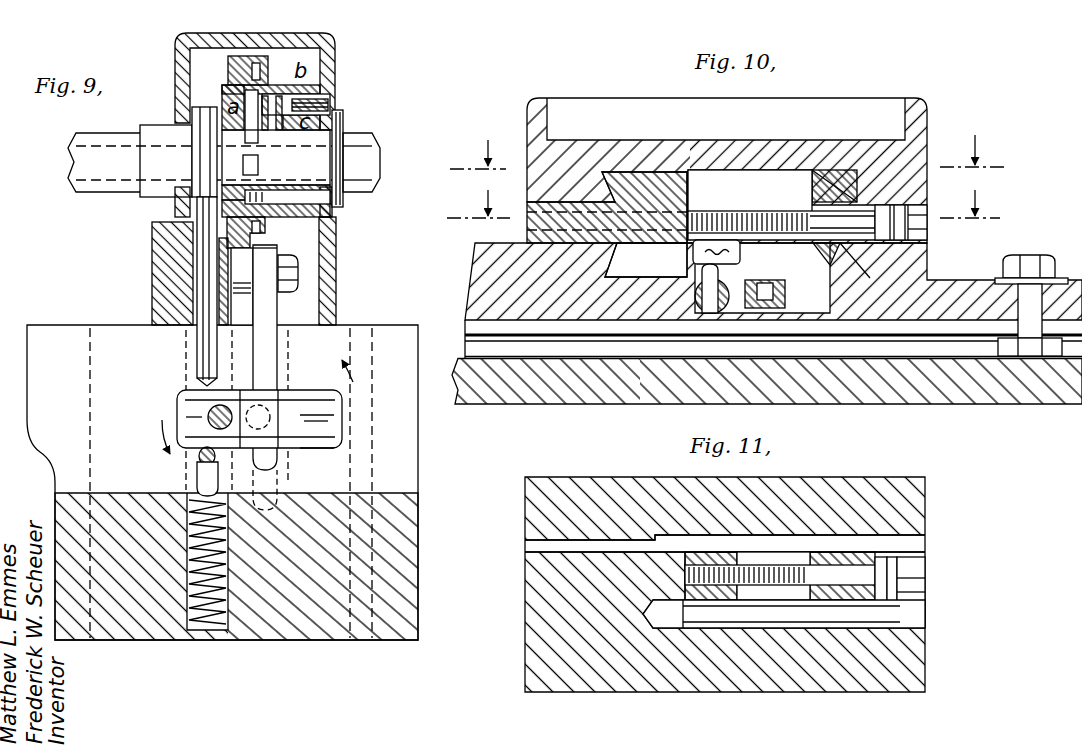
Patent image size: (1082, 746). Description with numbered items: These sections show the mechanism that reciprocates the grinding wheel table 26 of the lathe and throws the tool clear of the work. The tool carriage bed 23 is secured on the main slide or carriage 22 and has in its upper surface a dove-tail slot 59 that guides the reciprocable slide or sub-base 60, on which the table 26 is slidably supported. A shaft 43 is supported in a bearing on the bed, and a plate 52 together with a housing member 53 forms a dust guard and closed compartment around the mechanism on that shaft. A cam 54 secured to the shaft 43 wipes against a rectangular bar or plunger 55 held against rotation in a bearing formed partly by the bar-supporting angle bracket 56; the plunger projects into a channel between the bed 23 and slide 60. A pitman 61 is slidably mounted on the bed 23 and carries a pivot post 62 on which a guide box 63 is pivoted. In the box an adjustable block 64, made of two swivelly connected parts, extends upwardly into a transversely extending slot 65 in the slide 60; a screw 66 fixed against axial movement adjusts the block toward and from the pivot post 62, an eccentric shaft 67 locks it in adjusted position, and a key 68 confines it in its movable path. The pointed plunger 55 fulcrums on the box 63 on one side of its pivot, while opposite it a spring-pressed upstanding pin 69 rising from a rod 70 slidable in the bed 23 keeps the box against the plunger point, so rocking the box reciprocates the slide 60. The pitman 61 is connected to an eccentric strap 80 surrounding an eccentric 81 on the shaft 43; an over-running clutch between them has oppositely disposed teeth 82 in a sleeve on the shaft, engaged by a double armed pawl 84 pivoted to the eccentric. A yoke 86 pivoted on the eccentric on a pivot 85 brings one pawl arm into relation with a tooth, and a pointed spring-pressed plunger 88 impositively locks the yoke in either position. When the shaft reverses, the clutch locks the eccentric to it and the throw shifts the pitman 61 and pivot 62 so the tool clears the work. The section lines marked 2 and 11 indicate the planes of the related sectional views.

In FIG. 10, the section line 2- 2 is at (727, 151).
In FIG. 10, the section line 11- 11 is at (732, 200).
In FIG. 10, the main slide or carriage 22 is at (997, 370).
In FIG. 9, the tool carriage bed 23 is at (419, 466).
In FIG. 10, the tool carriage bed 23 is at (472, 272).
In FIG. 10, the table 26 is at (929, 136).
In FIG. 9, the shaft 43 is at (96, 183).
In FIG. 9, the plate 52 is at (176, 63).
In FIG. 9, the housing member 53 is at (337, 283).
In FIG. 9, the cam 54 is at (203, 105).
In FIG. 9, the bar or plunger 55 is at (200, 333).
In FIG. 9, the bar-supporting angle bracket 56 is at (150, 281).
In FIG. 10, the dove-tail slot 59 is at (612, 264).
In FIG. 9, the slide or sub-base 60 is at (419, 586).
In FIG. 10, the slide or sub-base 60 is at (525, 232).
In FIG. 11, the slide or sub-base 60 is at (927, 493).
In FIG. 9, the pitman 61 is at (259, 369).
In FIG. 10, the pitman 61 is at (787, 295).
In FIG. 9, the pivot post 62 is at (272, 420).
In FIG. 10, the pivot post 62 is at (763, 310).
In FIG. 9, the guide box 63 is at (307, 449).
In FIG. 10, the guide box 63 is at (846, 270).
In FIG. 9, the block 64 is at (206, 410).
In FIG. 10, the block 64 is at (795, 175).
In FIG. 11, the block 64 is at (683, 593).
In FIG. 10, the transversely extending slot 65 is at (793, 178).
In FIG. 11, the transversely extending slot 65 is at (757, 556).
In FIG. 10, the screw 66 is at (921, 232).
In FIG. 11, the screw 66 is at (927, 576).
In FIG. 11, the eccentric shaft 67 is at (927, 612).
In FIG. 11, the key 68 is at (927, 543).
In FIG. 9, the spring-pressed upstanding pin 69 is at (203, 462).
In FIG. 10, the rod 70 is at (700, 298).
In FIG. 9, the eccentric strap 80 is at (245, 271).
In FIG. 9, the eccentric 81 is at (274, 84).
In FIG. 9, the teeth 82 is at (259, 170).
In FIG. 9, the double armed pawl 84 is at (250, 101).
In FIG. 9, the pivot 85 is at (313, 197).
In FIG. 9, the yoke 86 is at (277, 223).
In FIG. 9, the spring-pressed plunger 88 is at (312, 100).